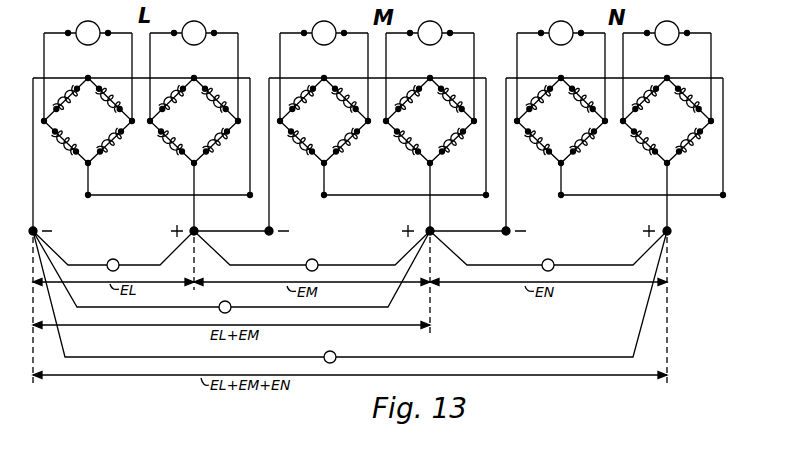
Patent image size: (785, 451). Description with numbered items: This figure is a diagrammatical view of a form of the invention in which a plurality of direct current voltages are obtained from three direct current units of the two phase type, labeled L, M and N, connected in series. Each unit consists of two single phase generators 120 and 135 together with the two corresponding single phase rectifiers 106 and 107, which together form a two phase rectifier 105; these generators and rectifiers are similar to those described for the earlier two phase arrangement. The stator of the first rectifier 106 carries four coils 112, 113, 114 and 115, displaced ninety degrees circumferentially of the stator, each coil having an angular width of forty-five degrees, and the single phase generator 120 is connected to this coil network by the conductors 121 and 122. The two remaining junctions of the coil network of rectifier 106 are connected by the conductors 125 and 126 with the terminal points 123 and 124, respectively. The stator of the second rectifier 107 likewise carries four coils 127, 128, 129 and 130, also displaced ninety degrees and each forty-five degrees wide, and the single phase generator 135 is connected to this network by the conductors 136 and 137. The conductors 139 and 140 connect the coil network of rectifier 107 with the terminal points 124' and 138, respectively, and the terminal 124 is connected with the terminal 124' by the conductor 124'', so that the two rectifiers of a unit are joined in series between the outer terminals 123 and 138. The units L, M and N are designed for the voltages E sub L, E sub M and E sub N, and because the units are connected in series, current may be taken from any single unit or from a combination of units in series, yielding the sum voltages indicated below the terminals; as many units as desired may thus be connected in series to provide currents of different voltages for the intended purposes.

The single phase generator 120 is at (88, 21).
The single phase generator 135 is at (194, 21).
The conductor 122 is at (44, 53).
The conductor 121 is at (132, 53).
The conductor 137 is at (150, 53).
The conductor 136 is at (238, 53).
The single phase rectifier 106 is at (114, 98).
The single phase rectifier 107 is at (176, 98).
The coil 112 is at (72, 102).
The coil 113 is at (109, 102).
The coil 114 is at (109, 140).
The coil 115 is at (71, 140).
The coil 127 is at (180, 102).
The coil 128 is at (216, 103).
The coil 129 is at (215, 141).
The coil 130 is at (177, 141).
The two phase rectifier 105 is at (168, 149).
The conductor 139 is at (250, 157).
The conductor 125 is at (33, 174).
The conductor 126 is at (88, 180).
The conductor 140 is at (194, 184).
The terminal point 124' is at (237, 187).
The conductor 124'' is at (169, 208).
The terminal point 124 is at (95, 207).
The terminal point 123 is at (35, 229).
The terminal point 138 is at (197, 229).